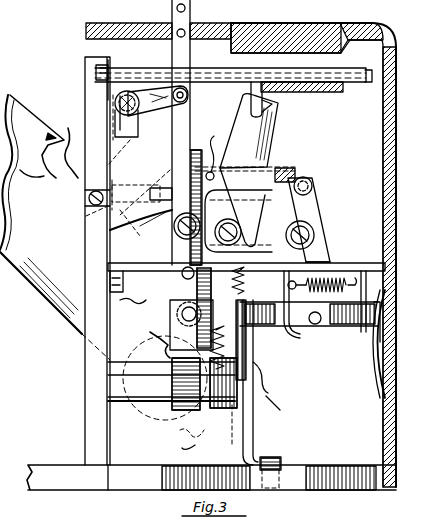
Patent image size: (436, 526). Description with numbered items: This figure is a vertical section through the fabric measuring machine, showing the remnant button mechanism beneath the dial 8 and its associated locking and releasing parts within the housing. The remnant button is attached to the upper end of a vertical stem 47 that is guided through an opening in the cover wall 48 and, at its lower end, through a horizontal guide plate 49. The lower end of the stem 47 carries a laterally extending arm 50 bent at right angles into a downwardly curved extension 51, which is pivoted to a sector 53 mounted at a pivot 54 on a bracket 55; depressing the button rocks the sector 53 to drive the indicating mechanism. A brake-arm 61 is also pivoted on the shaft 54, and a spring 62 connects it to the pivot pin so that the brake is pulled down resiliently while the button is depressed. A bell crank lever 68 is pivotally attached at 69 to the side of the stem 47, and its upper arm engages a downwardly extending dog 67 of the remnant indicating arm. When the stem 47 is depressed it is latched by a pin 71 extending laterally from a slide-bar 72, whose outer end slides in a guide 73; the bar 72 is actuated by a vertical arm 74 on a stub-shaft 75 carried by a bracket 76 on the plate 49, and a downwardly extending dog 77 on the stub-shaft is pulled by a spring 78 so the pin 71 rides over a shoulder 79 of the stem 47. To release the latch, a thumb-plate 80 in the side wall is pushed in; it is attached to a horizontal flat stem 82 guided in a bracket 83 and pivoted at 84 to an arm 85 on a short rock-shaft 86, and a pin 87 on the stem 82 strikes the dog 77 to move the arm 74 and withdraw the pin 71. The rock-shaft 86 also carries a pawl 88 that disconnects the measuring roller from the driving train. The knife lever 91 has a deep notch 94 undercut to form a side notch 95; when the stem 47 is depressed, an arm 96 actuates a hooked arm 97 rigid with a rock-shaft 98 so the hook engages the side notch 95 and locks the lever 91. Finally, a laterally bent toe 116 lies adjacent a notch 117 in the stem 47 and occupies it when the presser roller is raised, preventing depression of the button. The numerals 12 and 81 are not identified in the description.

The dial 8 is at (366, 80).
The base plate 12 is at (9, 172).
The vertical stem 47 is at (172, 50).
The cover wall 48 is at (125, 23).
The horizontal guide plate 49 is at (137, 278).
The laterally extending arm 50 is at (252, 348).
The downwardly curved extension 51 is at (198, 408).
The sector 53 is at (162, 378).
The pivot shaft 54 is at (275, 414).
The bracket 55 is at (250, 434).
The brake-arm 61 is at (229, 426).
The spring 62 is at (267, 386).
The downwardly extending dog 67 is at (268, 112).
The bell crank lever 68 is at (249, 170).
The pivot 69 is at (202, 220).
The pin 71 is at (213, 152).
The slide-bar 72 is at (280, 180).
The guide 73 is at (90, 198).
The vertical arm 74 is at (300, 198).
The stub-shaft 75 is at (308, 230).
The bracket 76 is at (318, 238).
The downwardly extending dog 77 is at (297, 309).
The spring 78 is at (338, 284).
The shoulder 79 is at (140, 121).
The thumb-plate 80 is at (378, 350).
The wall 81 is at (383, 410).
The horizontal flat stem 82 is at (321, 324).
The bracket 83 is at (368, 350).
The pivot 84 is at (191, 325).
The arm 85 is at (192, 300).
The rock-shaft 86 is at (152, 405).
The pin 87 is at (312, 352).
The pawl 88 is at (155, 345).
The knife lever 91 is at (55, 302).
The deep notch 94 is at (32, 178).
The side notch 95 is at (47, 138).
The arm 96 is at (158, 108).
The hooked arm 97 is at (71, 143).
The rock-shaft 98 is at (126, 118).
The laterally bent toe 116 is at (142, 195).
The notch 117 is at (141, 209).